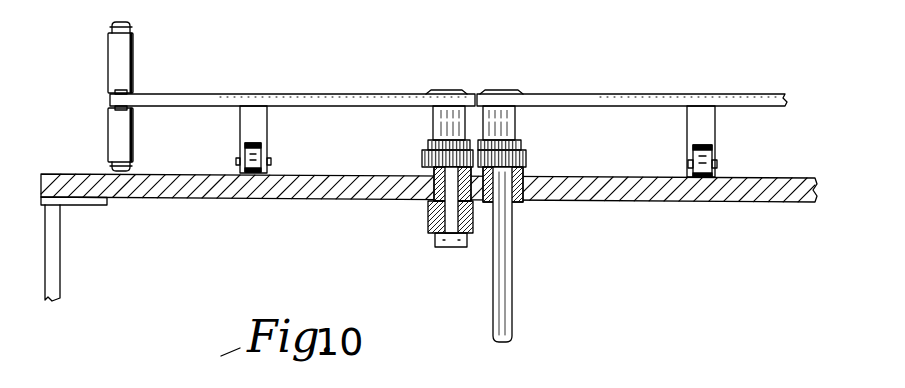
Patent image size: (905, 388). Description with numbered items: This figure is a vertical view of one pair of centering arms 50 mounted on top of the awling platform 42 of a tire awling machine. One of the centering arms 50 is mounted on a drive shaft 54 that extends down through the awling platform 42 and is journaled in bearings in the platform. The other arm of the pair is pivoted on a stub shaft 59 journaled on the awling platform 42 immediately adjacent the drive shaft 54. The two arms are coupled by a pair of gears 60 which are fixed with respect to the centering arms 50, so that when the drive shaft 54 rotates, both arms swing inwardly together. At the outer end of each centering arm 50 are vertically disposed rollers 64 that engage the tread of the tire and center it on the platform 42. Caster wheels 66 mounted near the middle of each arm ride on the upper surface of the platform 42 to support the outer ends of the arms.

The awling platform 42 is at (205, 192).
The centering arms 50 is at (318, 94).
The drive shaft 54 is at (512, 278).
The stub shaft 59 is at (450, 208).
The gears 60 is at (428, 145).
The rollers 64 is at (118, 62).
The caster wheels 66 is at (243, 162).